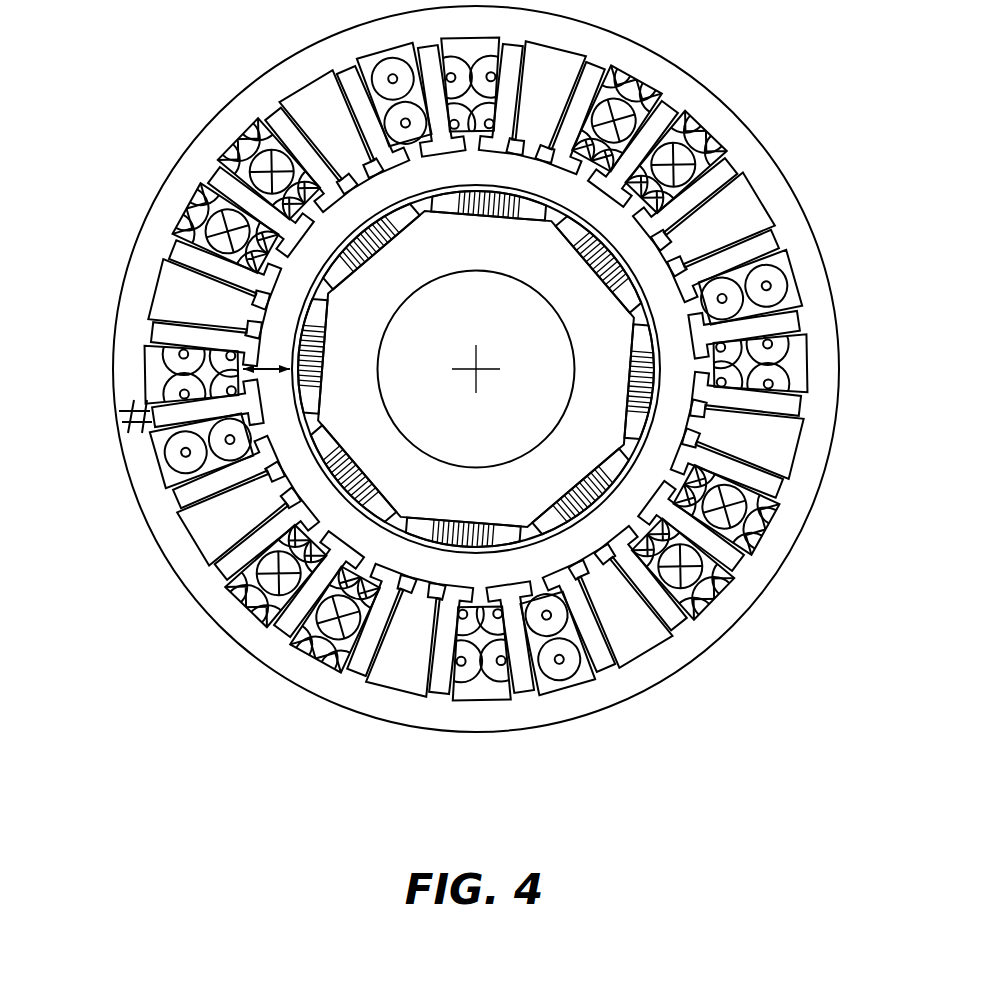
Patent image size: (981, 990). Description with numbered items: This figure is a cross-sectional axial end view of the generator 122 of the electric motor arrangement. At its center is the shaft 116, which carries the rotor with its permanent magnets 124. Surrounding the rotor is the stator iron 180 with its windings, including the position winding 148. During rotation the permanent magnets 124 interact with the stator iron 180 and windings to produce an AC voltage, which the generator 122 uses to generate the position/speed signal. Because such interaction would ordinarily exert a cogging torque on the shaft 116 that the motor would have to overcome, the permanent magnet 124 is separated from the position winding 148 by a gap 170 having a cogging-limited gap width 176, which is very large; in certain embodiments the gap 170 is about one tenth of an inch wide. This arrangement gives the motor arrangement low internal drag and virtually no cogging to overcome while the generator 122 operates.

The shaft 116 is at (517, 490).
The generator 122 is at (268, 731).
The permanent magnet 124 is at (335, 455).
The position winding 148 is at (192, 447).
The gap 170 is at (299, 447).
The cogging-limited gap width 176 is at (268, 366).
The stator iron 180 is at (122, 414).